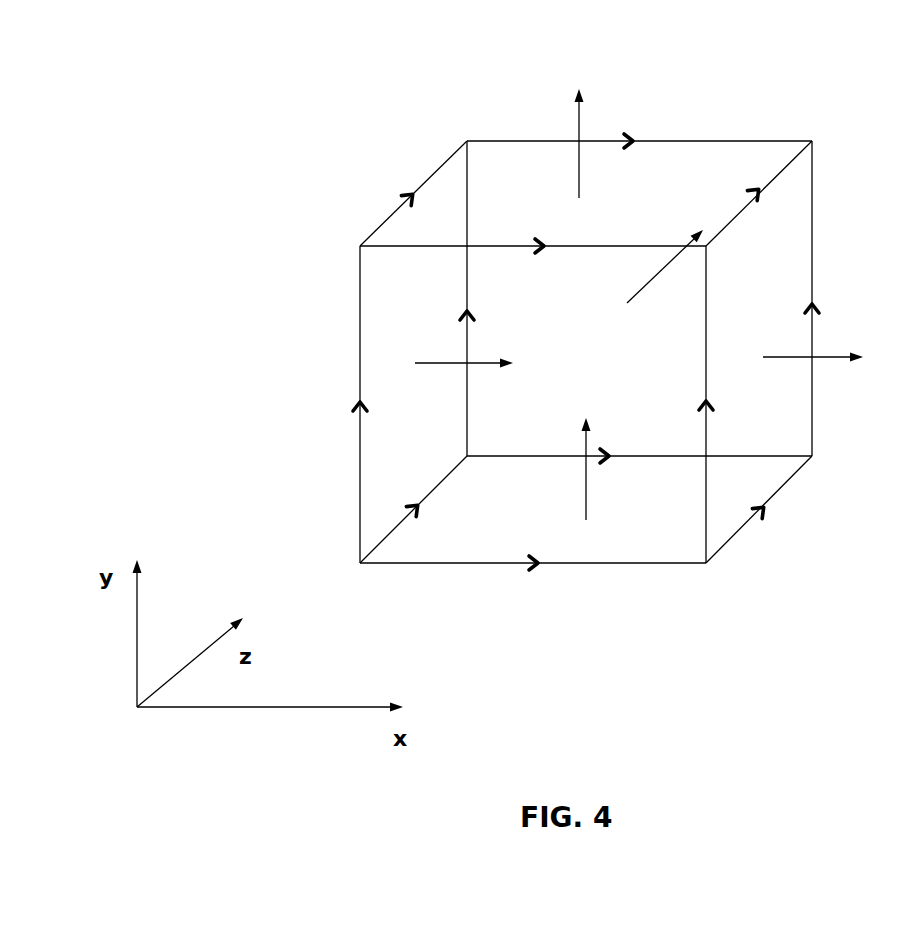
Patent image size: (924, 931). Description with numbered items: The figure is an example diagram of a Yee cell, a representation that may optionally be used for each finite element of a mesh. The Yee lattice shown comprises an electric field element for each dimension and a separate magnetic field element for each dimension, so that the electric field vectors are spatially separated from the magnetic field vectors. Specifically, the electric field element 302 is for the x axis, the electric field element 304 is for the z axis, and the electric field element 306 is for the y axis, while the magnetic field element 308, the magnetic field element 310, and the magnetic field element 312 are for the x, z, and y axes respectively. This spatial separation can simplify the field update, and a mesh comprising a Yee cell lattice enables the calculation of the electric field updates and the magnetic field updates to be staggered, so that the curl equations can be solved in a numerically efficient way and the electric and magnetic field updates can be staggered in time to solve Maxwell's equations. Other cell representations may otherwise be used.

The electric field element 302 is at (537, 568).
The electric field element 304 is at (764, 513).
The electric field element 306 is at (352, 408).
The magnetic field element 308 is at (820, 358).
The magnetic field element 310 is at (571, 371).
The magnetic field element 312 is at (579, 115).